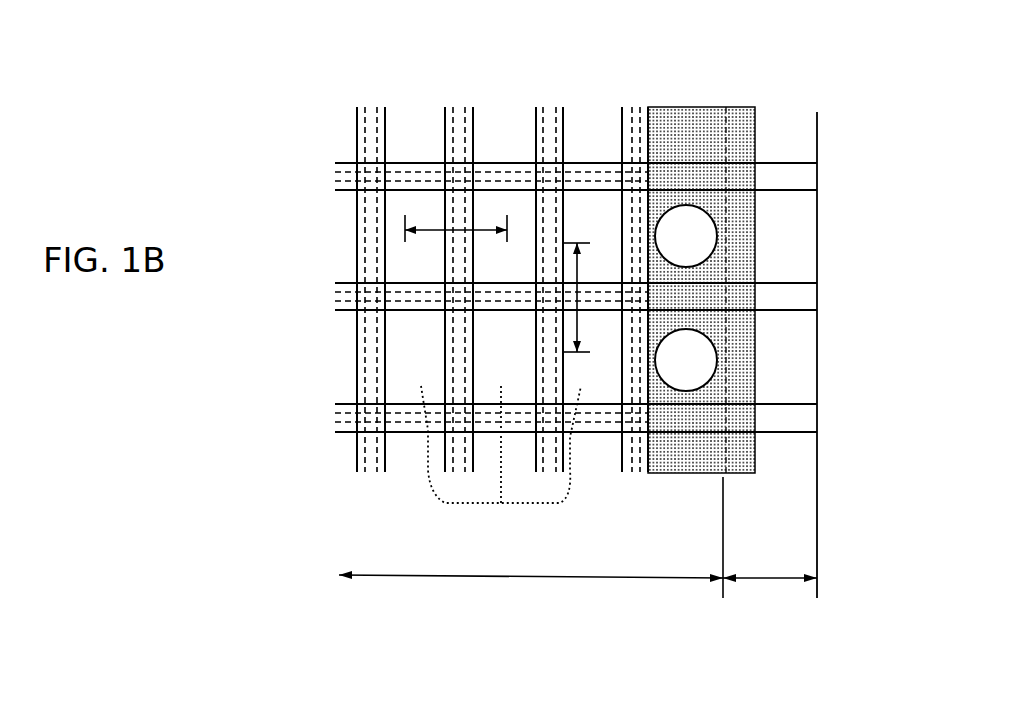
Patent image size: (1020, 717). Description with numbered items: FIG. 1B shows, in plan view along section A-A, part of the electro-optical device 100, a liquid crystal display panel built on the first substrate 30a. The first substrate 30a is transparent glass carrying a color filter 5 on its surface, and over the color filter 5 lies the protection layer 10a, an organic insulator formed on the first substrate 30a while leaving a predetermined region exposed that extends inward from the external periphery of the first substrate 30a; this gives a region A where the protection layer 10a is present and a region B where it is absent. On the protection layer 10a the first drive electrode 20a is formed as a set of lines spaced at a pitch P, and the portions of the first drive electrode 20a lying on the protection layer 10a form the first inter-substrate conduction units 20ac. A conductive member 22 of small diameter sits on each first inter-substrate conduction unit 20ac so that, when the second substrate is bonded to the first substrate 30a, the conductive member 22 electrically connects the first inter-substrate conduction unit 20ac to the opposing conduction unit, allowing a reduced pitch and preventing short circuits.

The electro-optical device 100 is at (332, 96).
The first drive electrode 20a is at (647, 93).
The first inter-substrate conduction unit 20ac is at (718, 480).
The protection layer 10a is at (728, 108).
The conductive member 22 is at (688, 360).
The first substrate 30a is at (817, 458).
The color filter 5 is at (501, 462).